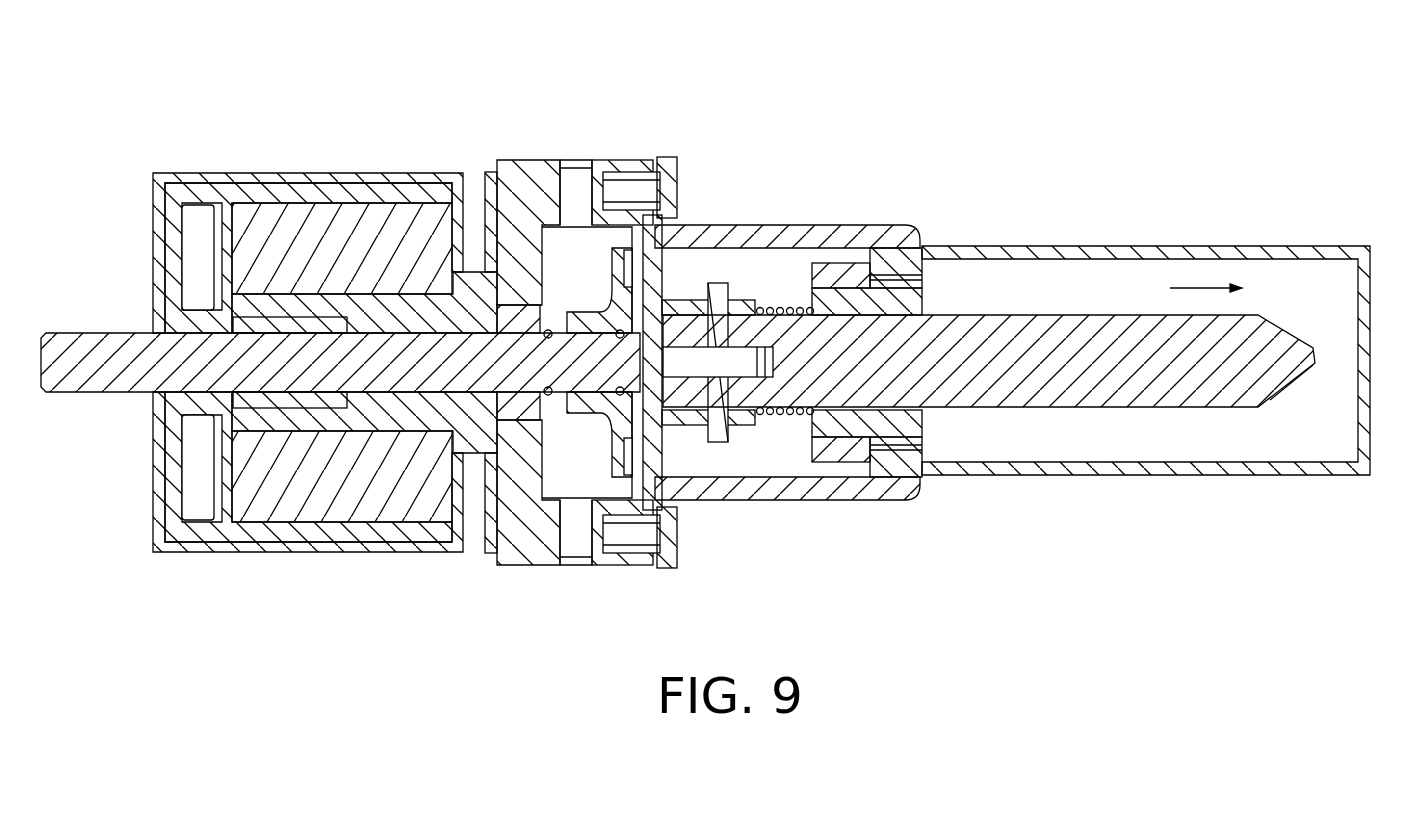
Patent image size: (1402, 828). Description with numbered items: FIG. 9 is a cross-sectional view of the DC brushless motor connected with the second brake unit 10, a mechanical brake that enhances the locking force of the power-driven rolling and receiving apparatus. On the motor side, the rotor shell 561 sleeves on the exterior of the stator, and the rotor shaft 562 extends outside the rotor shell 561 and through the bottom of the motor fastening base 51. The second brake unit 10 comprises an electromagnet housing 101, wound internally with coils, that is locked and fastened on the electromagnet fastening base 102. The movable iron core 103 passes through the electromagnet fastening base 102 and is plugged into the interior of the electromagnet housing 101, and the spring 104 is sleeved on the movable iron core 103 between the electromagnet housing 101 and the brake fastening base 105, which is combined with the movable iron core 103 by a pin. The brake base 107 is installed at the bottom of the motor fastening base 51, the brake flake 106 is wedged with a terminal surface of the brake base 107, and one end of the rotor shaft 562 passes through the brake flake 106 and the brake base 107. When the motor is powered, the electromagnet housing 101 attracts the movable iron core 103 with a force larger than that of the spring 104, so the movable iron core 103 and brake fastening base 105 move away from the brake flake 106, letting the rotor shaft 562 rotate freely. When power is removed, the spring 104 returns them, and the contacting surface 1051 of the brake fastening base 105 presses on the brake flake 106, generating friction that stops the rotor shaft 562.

The second brake unit 10 is at (1021, 152).
The motor fastening base 51 is at (527, 168).
The rotor shell 561 is at (389, 178).
The rotor shaft 562 is at (430, 370).
The electromagnet housing 101 is at (1233, 250).
The electromagnet fastening base 102 is at (830, 227).
The movable iron core 103 is at (1070, 395).
The spring 104 is at (800, 415).
The brake fastening base 105 is at (697, 417).
The contacting surface 1051 is at (636, 248).
The brake flake 106 is at (640, 480).
The brake base 107 is at (617, 460).